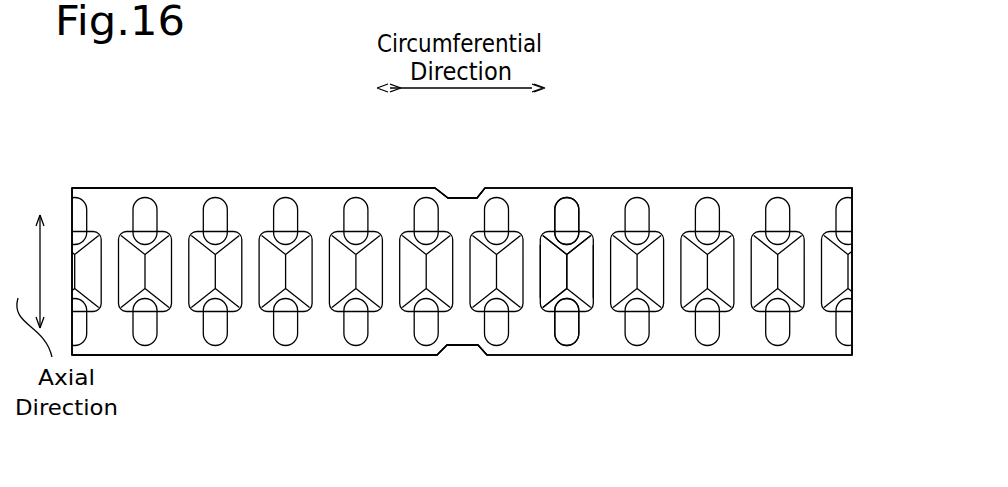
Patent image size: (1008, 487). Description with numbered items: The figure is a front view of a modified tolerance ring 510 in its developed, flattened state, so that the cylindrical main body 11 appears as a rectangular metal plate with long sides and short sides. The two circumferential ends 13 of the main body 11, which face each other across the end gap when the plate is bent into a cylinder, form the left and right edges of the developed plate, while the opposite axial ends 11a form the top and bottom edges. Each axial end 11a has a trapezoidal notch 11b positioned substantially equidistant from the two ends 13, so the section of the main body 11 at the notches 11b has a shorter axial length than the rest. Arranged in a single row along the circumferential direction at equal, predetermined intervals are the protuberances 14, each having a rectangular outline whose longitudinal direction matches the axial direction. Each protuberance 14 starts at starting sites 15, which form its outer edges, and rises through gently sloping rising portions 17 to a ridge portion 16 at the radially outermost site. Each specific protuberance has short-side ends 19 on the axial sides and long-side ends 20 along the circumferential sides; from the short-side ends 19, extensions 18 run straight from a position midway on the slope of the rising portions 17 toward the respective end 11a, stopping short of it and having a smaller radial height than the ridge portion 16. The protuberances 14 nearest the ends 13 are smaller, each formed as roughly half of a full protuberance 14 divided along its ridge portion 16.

The tolerance ring 510 is at (147, 92).
The main body 11 is at (243, 186).
The end 11a is at (312, 187).
The notch 11b is at (461, 196).
The end 13 is at (72, 189).
The protuberance 14 is at (85, 230).
The starting site 15 is at (580, 240).
The ridge portion 16 is at (565, 265).
The rising portion 17 is at (548, 283).
The extension 18 is at (568, 207).
The short-side end 19 is at (550, 233).
The long-side end 20 is at (597, 290).